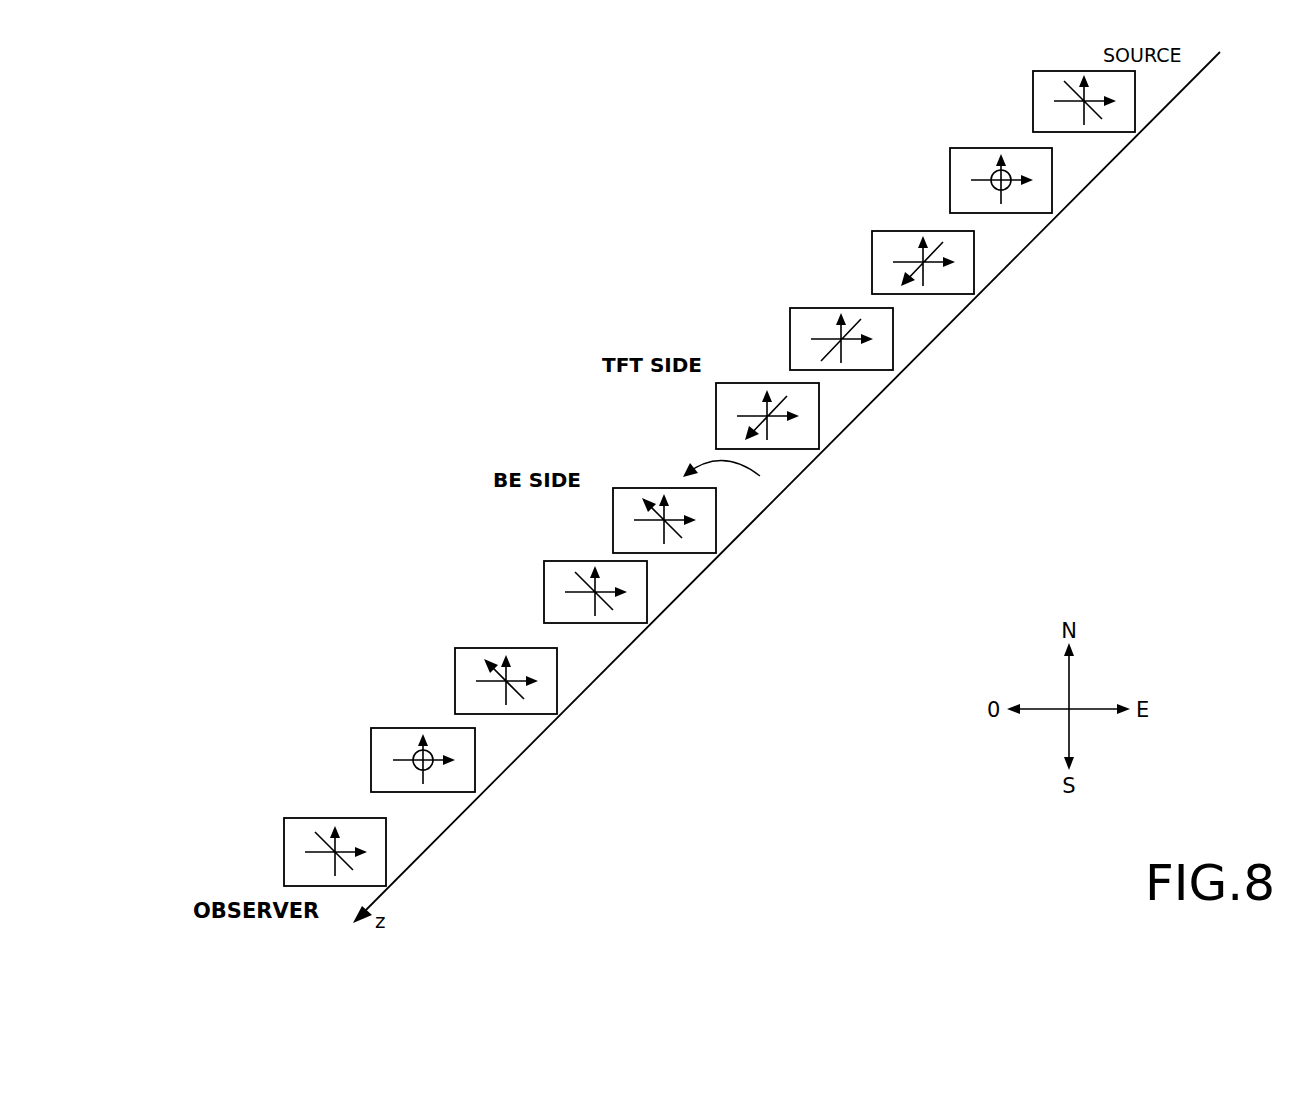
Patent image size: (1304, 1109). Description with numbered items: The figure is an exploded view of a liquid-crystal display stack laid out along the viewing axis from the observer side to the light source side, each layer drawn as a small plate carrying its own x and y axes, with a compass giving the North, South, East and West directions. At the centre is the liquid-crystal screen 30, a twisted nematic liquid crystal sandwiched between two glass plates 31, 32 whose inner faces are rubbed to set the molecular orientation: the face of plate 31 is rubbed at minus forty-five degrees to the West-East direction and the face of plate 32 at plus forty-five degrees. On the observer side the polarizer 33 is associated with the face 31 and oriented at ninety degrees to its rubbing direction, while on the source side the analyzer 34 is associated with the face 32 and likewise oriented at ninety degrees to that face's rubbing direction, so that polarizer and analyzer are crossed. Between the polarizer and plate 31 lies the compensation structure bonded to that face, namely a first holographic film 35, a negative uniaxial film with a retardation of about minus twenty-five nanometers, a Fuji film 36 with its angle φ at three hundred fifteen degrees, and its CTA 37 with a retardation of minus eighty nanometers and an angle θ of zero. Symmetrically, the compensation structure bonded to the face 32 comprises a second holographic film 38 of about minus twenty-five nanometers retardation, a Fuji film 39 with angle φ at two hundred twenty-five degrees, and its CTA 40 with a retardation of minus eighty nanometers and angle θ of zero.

The liquid-crystal screen 30 is at (660, 442).
The glass plate 31 is at (613, 513).
The glass plate 32 is at (716, 390).
The polarizer 33 is at (284, 840).
The analyzer 34 is at (1033, 90).
The first holographic film 35 is at (544, 595).
The Fuji film 36 is at (455, 676).
The CTA 37 is at (371, 755).
The second holographic film 38 is at (790, 325).
The Fuji film 39 is at (872, 252).
The CTA 40 is at (950, 172).